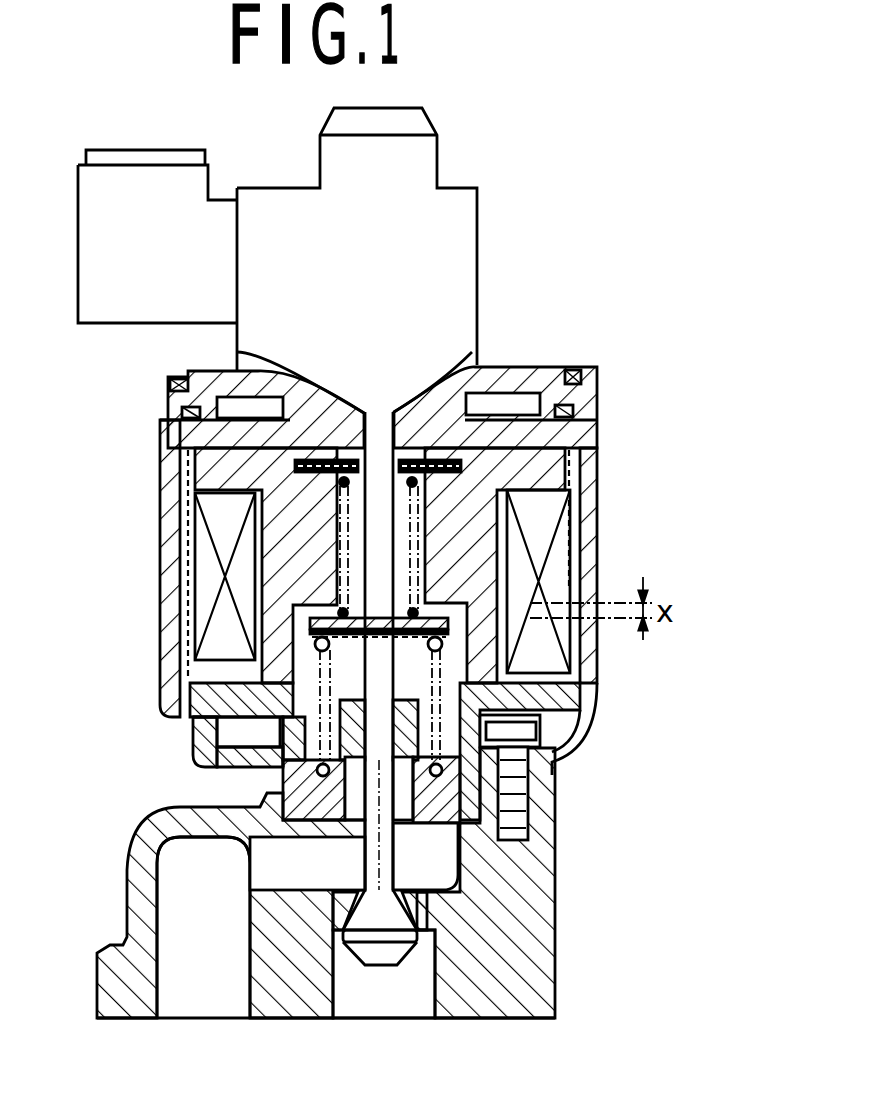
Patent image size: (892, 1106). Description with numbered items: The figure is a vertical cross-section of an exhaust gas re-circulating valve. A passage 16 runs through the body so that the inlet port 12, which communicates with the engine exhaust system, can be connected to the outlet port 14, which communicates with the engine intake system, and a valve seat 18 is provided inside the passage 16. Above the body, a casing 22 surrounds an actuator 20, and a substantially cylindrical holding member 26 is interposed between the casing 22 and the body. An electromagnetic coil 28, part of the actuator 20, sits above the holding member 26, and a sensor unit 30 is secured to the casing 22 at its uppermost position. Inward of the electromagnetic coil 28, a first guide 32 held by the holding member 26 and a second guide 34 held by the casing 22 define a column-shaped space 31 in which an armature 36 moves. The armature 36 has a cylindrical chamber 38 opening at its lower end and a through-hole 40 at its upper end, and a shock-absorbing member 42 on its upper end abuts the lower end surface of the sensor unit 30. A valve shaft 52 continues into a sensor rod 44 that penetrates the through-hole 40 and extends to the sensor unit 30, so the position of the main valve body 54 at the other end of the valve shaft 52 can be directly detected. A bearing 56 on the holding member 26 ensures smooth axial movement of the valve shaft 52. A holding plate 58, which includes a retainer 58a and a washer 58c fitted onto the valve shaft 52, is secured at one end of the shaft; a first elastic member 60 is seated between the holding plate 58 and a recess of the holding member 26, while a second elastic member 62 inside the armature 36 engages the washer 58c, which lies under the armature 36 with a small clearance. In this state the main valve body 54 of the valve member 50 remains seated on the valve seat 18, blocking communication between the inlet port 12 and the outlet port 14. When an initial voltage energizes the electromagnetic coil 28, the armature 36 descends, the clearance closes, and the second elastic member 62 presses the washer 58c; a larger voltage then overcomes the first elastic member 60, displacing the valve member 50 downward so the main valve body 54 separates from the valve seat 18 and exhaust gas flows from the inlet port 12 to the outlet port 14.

The inlet port 12 is at (420, 1003).
The outlet port 14 is at (190, 1000).
The passage 16 is at (217, 953).
The valve seat 18 is at (313, 1003).
The actuator 20 is at (535, 643).
The casing 22 is at (595, 530).
The holding member 26 is at (283, 773).
The electromagnetic coil 28 is at (205, 612).
The sensor unit 30 is at (380, 280).
The space 31 is at (165, 662).
The first guide 32 is at (575, 732).
The second guide 34 is at (568, 436).
The armature 36 is at (555, 512).
The cylindrical chamber 38 is at (597, 563).
The through-hole 40 is at (355, 396).
The shock-absorbing member 42 is at (437, 440).
The sensor rod 44 is at (378, 410).
The valve member 50 is at (398, 860).
The valve shaft 52 is at (375, 840).
The main valve body 54 is at (380, 967).
The bearing 56 is at (557, 783).
The holding plate 58 is at (347, 648).
The retainer 58a is at (450, 640).
The washer 58c is at (320, 598).
The first elastic member 60 is at (530, 825).
The second elastic member 62 is at (240, 515).